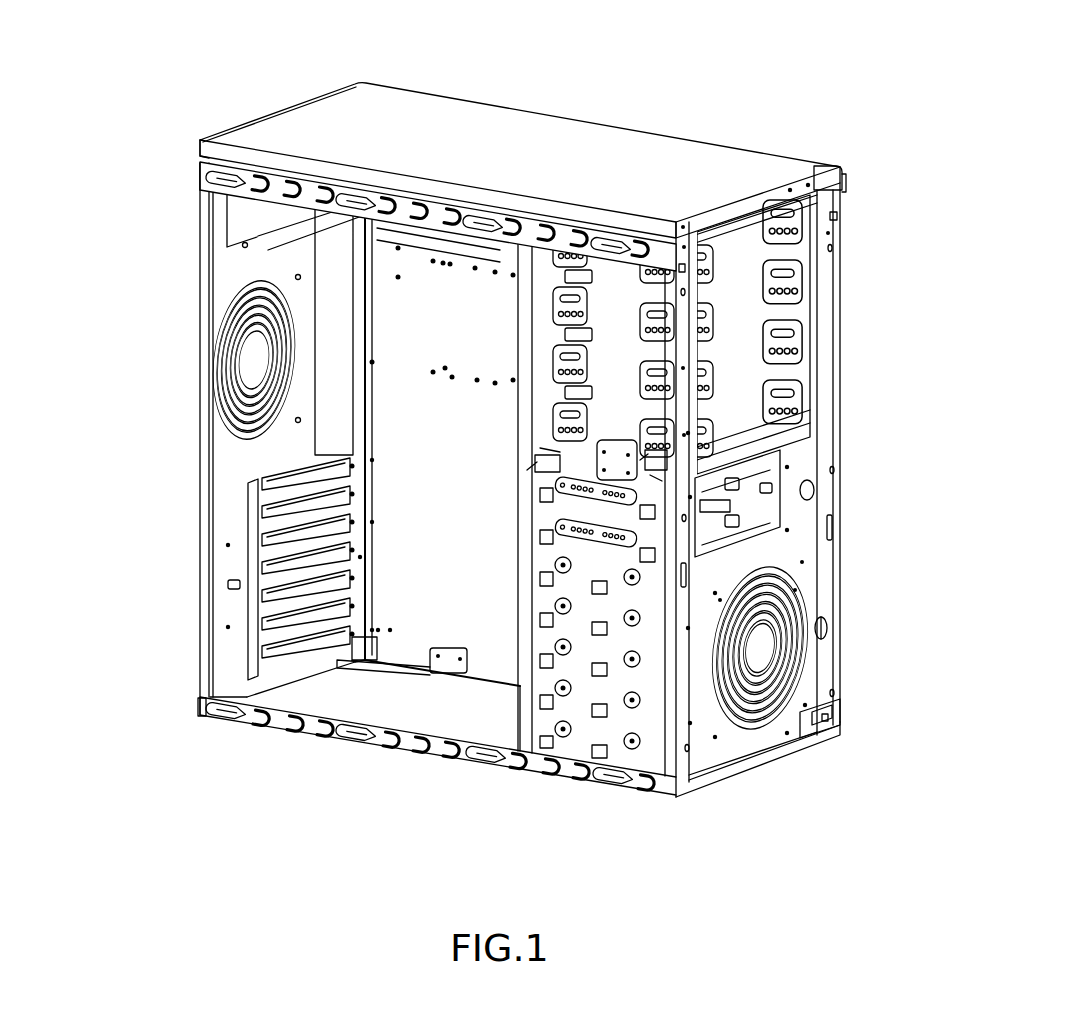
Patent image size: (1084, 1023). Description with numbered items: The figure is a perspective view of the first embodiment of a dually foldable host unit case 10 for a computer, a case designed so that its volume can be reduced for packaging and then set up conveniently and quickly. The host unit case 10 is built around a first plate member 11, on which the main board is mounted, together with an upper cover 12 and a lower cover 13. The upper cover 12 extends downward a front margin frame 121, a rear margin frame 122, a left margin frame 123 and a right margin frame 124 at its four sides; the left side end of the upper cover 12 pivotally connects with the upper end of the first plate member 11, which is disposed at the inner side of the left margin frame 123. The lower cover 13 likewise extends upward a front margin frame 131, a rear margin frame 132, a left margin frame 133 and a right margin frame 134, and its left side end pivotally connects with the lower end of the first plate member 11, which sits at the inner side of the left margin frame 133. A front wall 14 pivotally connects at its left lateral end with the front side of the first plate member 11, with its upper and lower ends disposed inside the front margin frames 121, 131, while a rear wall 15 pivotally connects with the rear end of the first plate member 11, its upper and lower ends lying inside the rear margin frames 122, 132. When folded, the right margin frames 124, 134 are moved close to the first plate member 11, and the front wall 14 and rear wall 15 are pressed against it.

The host unit case 10 is at (528, 31).
The first plate member 11 is at (410, 636).
The upper cover 12 is at (690, 154).
The front margin frame 121 is at (822, 178).
The rear margin frame 122 is at (280, 113).
The left margin frame 123 is at (843, 174).
The right margin frame 124 is at (198, 142).
The lower cover 13 is at (478, 720).
The front margin frame 131 is at (761, 759).
The rear margin frame 132 is at (200, 706).
The left margin frame 133 is at (842, 728).
The right margin frame 134 is at (617, 780).
The front wall 14 is at (822, 447).
The rear wall 15 is at (215, 526).